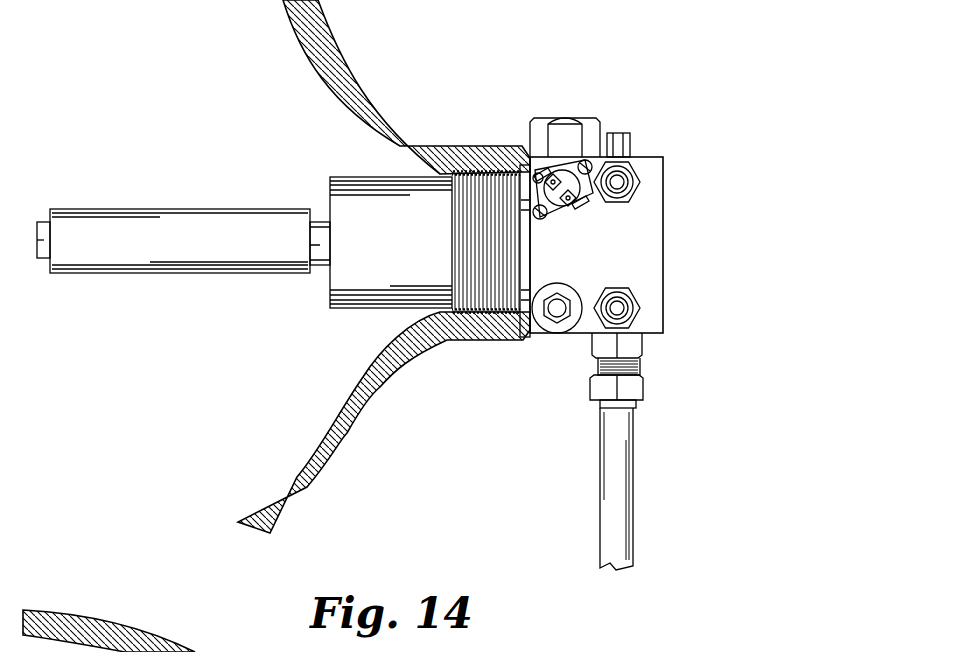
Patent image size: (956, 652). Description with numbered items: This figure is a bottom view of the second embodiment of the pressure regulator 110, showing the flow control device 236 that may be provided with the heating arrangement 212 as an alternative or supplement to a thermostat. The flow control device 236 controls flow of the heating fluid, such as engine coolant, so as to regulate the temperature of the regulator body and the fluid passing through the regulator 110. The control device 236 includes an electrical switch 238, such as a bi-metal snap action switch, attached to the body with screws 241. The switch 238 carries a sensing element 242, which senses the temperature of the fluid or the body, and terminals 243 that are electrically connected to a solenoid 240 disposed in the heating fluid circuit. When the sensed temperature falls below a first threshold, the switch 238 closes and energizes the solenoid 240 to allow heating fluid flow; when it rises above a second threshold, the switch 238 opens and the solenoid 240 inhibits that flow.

The pressure regulator 110 is at (712, 96).
The heating arrangement 212 is at (553, 153).
The flow control device 236 is at (603, 207).
The electrical switch 238 is at (550, 214).
The solenoid 240 is at (557, 312).
The screws 241 is at (587, 162).
The sensing element 242 is at (567, 180).
The terminals 243 is at (538, 170).